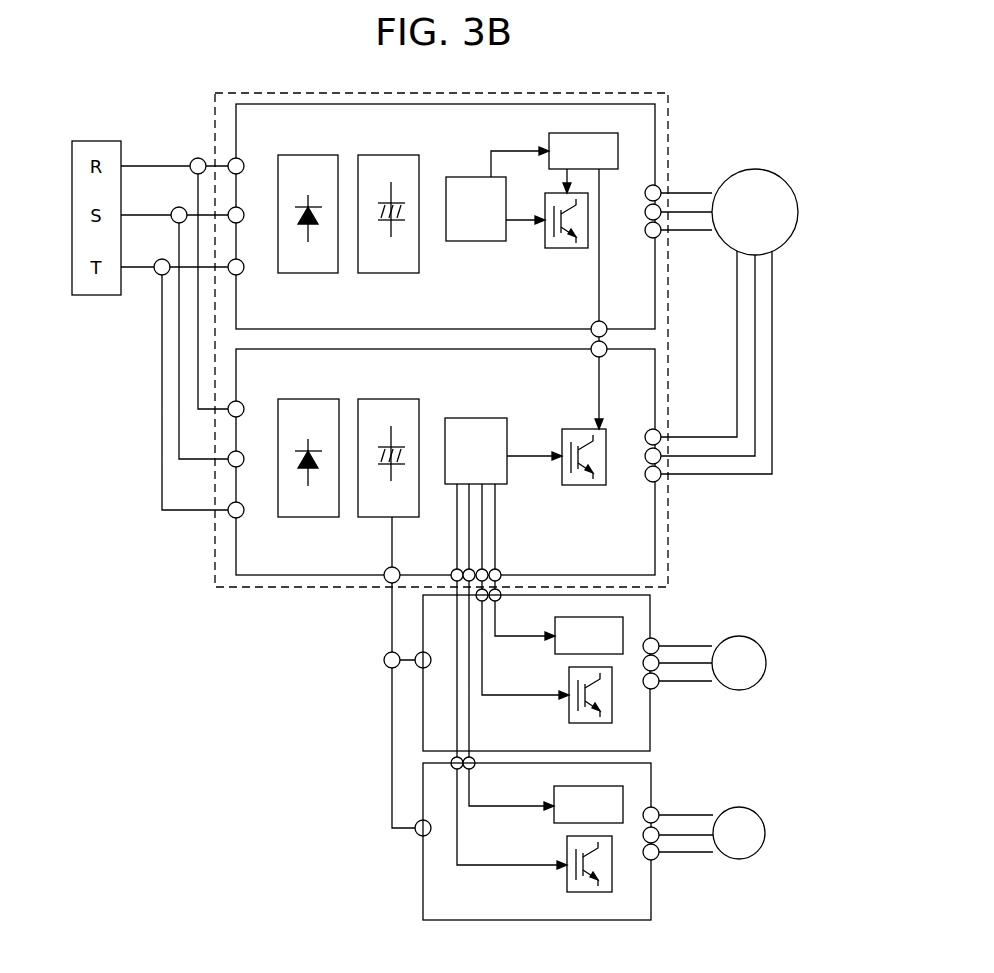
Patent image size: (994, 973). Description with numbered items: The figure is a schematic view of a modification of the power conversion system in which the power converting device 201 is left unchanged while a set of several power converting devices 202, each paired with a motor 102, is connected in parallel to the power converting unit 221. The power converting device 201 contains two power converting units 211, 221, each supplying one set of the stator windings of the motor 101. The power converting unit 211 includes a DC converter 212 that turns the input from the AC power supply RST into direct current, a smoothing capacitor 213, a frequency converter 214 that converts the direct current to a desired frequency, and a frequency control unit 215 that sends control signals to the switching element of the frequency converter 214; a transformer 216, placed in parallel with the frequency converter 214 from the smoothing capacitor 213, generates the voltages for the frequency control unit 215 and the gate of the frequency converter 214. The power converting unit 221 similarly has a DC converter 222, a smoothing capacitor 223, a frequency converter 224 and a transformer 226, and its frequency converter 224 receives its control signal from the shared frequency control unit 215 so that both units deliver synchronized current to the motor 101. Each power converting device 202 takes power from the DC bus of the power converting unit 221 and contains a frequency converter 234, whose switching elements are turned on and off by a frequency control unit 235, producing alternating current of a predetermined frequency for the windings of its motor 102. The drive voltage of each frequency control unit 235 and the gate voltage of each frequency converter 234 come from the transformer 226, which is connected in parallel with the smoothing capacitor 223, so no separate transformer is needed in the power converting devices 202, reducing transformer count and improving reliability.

The motor 101 is at (728, 253).
The motor 102 is at (739, 690).
The power converting device 201 is at (255, 588).
The power converting device 202 is at (536, 755).
The power converting unit 211 is at (483, 266).
The DC converter 212 is at (307, 273).
The smoothing capacitor 213 is at (385, 273).
The frequency converter 214 is at (567, 248).
The frequency control unit 215 is at (549, 142).
The transformer 216 is at (467, 241).
The power converting unit 221 is at (403, 451).
The DC converter 222 is at (305, 517).
The smoothing capacitor 223 is at (377, 517).
The frequency converter 224 is at (580, 485).
The transformer 226 is at (477, 418).
The frequency converter 234 is at (569, 712).
The frequency control unit 235 is at (555, 651).